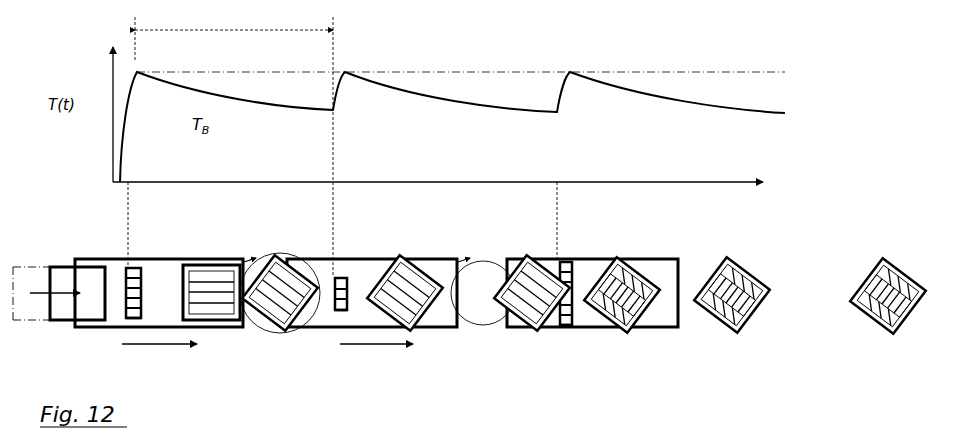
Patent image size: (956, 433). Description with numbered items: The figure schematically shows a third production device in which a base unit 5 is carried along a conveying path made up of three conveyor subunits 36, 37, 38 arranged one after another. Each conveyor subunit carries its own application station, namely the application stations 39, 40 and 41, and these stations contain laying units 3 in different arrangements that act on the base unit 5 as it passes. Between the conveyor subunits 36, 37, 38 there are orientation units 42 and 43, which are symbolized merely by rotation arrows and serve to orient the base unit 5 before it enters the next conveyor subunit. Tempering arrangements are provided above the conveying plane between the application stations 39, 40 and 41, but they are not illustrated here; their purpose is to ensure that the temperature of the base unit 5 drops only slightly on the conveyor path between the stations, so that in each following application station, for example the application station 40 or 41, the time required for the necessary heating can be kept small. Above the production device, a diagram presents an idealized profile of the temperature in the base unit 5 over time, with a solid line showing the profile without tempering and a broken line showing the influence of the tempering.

The laying unit 3 is at (122, 310).
The base unit 5 is at (60, 272).
The conveyor subunit 36 is at (165, 268).
The conveyor subunit 37 is at (365, 268).
The conveyor subunit 38 is at (590, 268).
The application station 39 is at (137, 264).
The application station 40 is at (343, 275).
The application station 41 is at (566, 258).
The orientation unit 42 is at (270, 340).
The orientation unit 43 is at (486, 337).